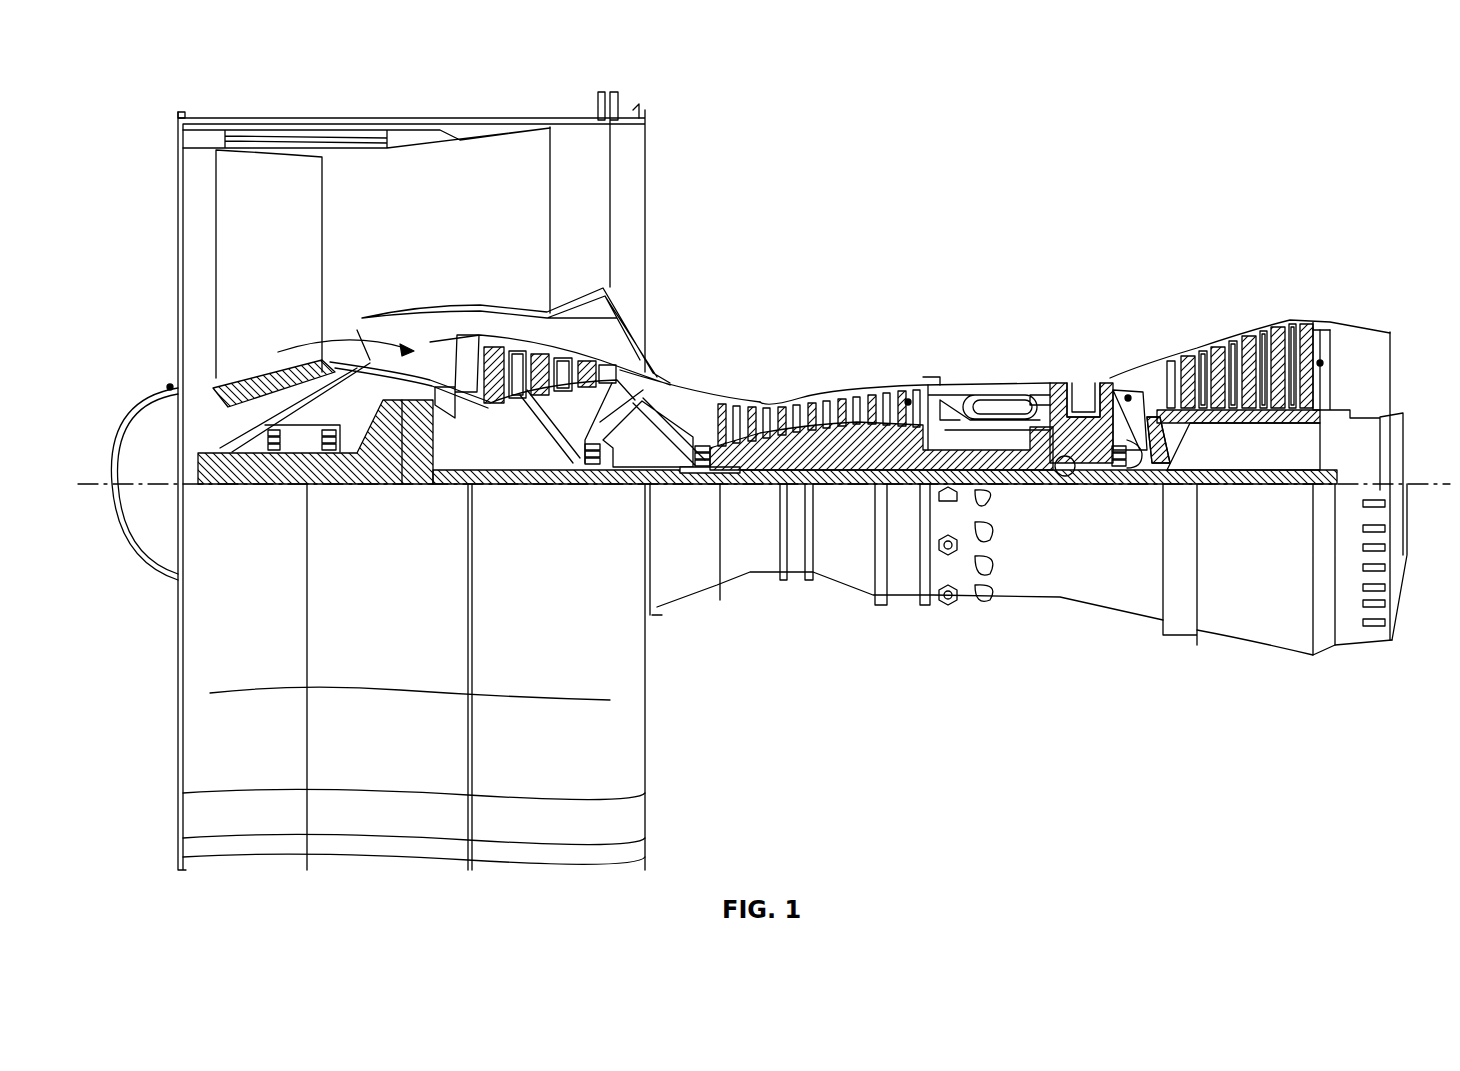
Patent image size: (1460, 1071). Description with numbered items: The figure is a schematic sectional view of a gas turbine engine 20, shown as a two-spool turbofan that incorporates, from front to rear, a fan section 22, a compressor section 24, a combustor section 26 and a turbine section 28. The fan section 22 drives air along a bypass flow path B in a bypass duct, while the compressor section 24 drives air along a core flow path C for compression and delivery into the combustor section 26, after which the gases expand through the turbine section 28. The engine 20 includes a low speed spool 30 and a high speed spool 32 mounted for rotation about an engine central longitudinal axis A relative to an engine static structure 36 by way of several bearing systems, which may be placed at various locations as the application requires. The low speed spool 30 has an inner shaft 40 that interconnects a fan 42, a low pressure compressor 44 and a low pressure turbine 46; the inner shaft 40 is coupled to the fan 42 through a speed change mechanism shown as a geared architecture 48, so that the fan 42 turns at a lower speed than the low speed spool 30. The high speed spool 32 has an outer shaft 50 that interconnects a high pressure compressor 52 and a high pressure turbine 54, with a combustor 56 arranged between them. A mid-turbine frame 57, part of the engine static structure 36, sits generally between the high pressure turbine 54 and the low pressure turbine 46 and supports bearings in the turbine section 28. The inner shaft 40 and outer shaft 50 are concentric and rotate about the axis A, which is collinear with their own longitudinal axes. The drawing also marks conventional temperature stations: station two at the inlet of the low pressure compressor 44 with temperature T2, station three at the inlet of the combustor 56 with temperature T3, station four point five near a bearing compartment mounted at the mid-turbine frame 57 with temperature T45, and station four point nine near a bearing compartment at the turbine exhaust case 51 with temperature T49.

The gas turbine engine 20 is at (1158, 142).
The fan section 22 is at (452, 90).
The compressor section 24 is at (990, 252).
The combustor section 26 is at (1053, 252).
The turbine section 28 is at (1343, 252).
The low speed spool 30 is at (853, 489).
The high speed spool 32 is at (915, 445).
The engine static structure 36 is at (903, 604).
The inner shaft 40 is at (678, 488).
The fan 42 is at (283, 251).
The low pressure compressor 44 is at (560, 355).
The low pressure turbine 46 is at (1242, 348).
The geared architecture 48 is at (422, 462).
The outer shaft 50 is at (1070, 475).
The turbine exhaust case 51 is at (1332, 332).
The high pressure compressor 52 is at (800, 445).
The high pressure turbine 54 is at (1080, 388).
The combustor 56 is at (1003, 410).
The mid-turbine frame 57 is at (1133, 372).
The engine central longitudinal axis A is at (1445, 484).
The bypass flow path B is at (490, 217).
The core flow path C is at (300, 342).
The temperature at station 2 T2 is at (170, 387).
The temperature at station 3 T3 is at (908, 402).
The temperature at station 4.5 T45 is at (1128, 398).
The temperature at station 4.9 T49 is at (1320, 363).